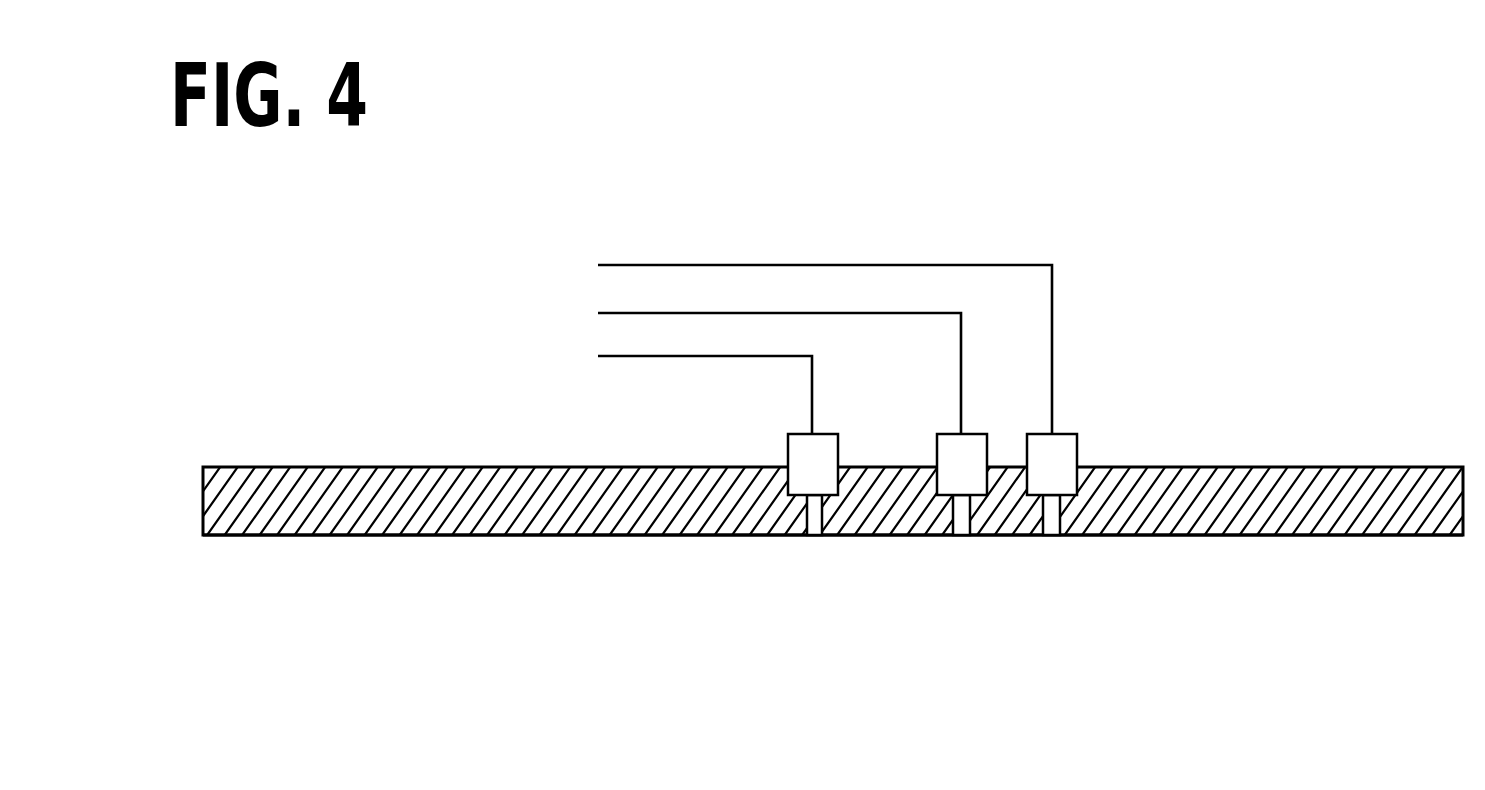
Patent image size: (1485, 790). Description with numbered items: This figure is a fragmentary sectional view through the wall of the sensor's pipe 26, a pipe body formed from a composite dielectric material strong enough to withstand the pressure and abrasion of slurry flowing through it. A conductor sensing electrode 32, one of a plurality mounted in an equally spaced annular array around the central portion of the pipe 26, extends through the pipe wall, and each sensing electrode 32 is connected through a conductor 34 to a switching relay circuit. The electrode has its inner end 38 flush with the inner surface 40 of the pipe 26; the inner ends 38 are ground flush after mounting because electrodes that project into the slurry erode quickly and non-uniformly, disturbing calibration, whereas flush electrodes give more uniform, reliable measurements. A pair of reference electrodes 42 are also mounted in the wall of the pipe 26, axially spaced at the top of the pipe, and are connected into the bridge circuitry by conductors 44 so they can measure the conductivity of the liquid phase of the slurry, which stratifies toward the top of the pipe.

The pipe 26 is at (1244, 465).
The conductor sensing electrode 32 is at (794, 494).
The conductor 34 is at (677, 408).
The inner end 38 is at (826, 546).
The inner surface 40 is at (1250, 544).
The reference electrode 42 is at (982, 441).
The conductor 44 is at (970, 340).